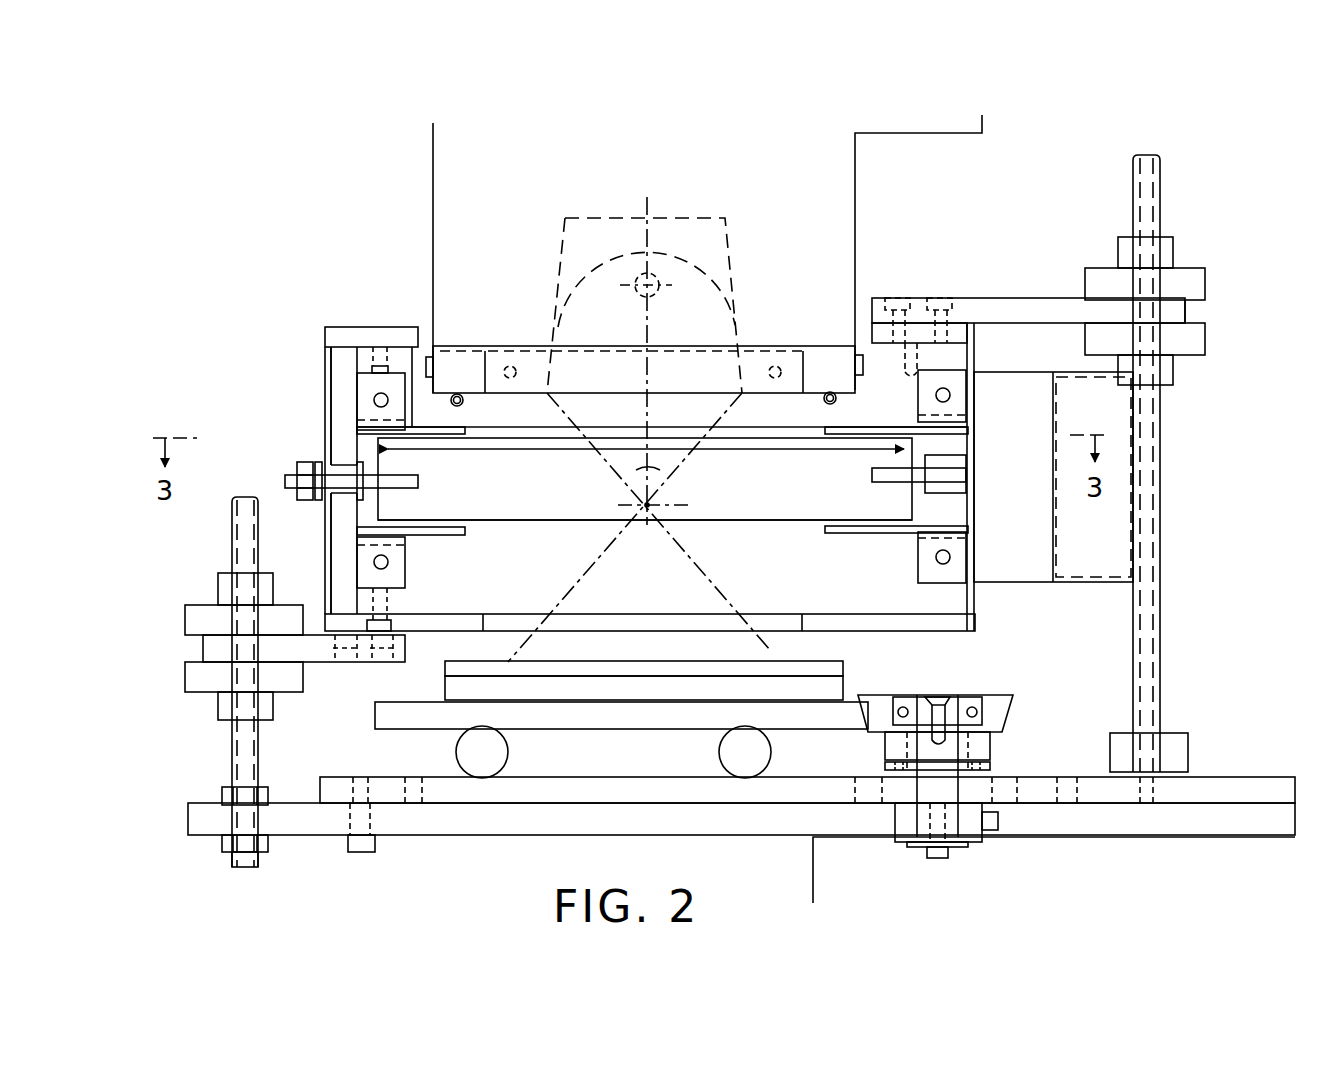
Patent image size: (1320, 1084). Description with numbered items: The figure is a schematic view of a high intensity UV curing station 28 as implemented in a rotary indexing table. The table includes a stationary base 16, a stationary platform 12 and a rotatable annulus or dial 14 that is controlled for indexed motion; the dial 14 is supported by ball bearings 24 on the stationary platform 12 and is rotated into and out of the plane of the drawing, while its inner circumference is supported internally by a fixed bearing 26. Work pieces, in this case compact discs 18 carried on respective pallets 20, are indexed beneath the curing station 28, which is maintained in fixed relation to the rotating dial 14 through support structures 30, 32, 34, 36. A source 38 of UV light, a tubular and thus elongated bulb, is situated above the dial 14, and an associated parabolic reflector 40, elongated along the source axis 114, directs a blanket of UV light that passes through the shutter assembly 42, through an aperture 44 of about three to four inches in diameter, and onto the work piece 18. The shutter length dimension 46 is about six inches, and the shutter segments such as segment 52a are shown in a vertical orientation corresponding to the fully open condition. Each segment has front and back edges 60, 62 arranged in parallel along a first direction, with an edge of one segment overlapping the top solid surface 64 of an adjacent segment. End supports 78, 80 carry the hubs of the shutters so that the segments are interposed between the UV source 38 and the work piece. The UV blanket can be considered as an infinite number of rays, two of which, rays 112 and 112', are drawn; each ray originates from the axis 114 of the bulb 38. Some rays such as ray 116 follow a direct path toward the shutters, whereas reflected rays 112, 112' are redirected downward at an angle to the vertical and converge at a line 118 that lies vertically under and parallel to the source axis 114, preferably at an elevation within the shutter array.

The stationary platform 12 is at (508, 797).
The rotatable dial 14 is at (375, 716).
The stationary base 16 is at (813, 870).
The compact disc 18 is at (843, 670).
The pallet 20 is at (445, 688).
The ball bearings 24 is at (771, 750).
The fixed bearing 26 is at (1000, 695).
The UV curing station 28 is at (295, 330).
The support structure 30 is at (218, 590).
The support structure 32 is at (317, 633).
The support structure 34 is at (1160, 465).
The support structure 36 is at (982, 298).
The UV light source 38 is at (655, 285).
The reflector 40 is at (722, 316).
The shutter assembly 42 is at (325, 448).
The aperture 44 is at (492, 628).
The shutter length dimension 46 is at (724, 457).
The shutter segment 52a is at (520, 524).
The front edge 60 is at (748, 526).
The back edge 62 is at (733, 436).
The top solid surface 64 is at (645, 479).
The end support 78 is at (331, 378).
The end support 80 is at (955, 442).
The UV ray 112 is at (625, 527).
The UV ray 112' is at (672, 521).
The source axis 114 is at (652, 290).
The direct UV ray 116 is at (656, 465).
The convergence line 118 is at (647, 515).